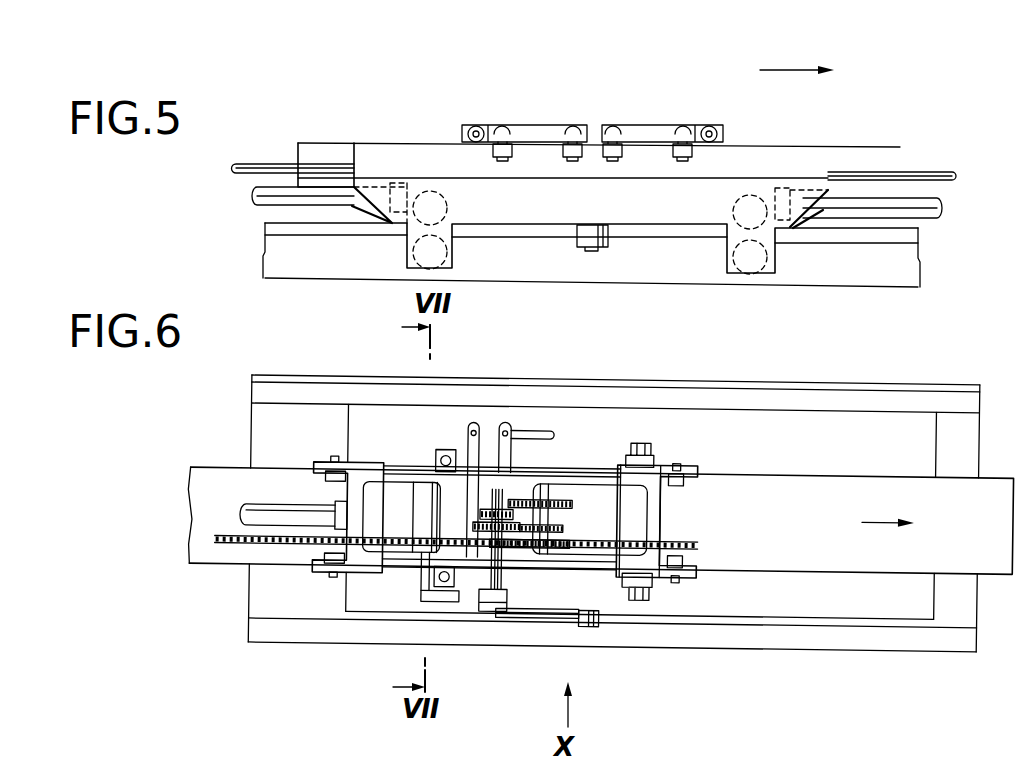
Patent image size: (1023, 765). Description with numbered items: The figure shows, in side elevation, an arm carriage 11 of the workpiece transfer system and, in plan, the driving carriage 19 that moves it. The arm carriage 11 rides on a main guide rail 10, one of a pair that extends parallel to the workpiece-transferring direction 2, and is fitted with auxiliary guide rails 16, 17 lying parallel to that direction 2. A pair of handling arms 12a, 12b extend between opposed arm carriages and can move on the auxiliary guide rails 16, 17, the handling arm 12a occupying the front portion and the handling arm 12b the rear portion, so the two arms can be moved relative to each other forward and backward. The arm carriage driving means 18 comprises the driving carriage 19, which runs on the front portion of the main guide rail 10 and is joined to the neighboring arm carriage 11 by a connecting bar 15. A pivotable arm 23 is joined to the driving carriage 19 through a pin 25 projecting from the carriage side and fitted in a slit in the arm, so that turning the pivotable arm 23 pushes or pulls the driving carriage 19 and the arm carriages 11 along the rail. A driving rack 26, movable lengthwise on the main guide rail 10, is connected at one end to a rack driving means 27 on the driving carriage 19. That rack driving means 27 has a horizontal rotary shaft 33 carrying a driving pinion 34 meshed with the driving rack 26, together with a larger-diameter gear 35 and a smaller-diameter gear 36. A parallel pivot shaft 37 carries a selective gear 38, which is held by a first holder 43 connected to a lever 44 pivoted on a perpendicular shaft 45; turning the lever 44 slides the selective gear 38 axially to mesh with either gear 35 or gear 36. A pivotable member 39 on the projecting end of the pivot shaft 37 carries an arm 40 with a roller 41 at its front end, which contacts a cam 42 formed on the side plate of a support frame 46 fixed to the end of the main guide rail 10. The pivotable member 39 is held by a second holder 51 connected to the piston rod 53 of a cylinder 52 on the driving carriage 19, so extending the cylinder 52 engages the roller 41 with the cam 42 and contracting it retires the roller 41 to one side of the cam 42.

In FIG. 5, the workpiece-transferring direction 2 is at (788, 70).
In FIG. 6, the workpiece-transferring direction 2 is at (882, 514).
In FIG. 5, the main guide rail 10 is at (655, 280).
In FIG. 6, the main guide rail 10 is at (802, 475).
In FIG. 5, the arm carriage 11 is at (521, 225).
In FIG. 5, the handling arm 12a is at (645, 126).
In FIG. 5, the handling arm 12b is at (531, 126).
In FIG. 5, the connecting bar 15 is at (273, 186).
In FIG. 6, the connecting bar 15 is at (275, 509).
In FIG. 5, the auxiliary guide rail 16 is at (407, 146).
In FIG. 5, the auxiliary guide rail 17 is at (320, 144).
In FIG. 6, the arm carriage driving means 18 is at (692, 583).
In FIG. 6, the driving carriage 19 is at (597, 470).
In FIG. 6, the pivotable arm 23 is at (659, 448).
In FIG. 6, the pin 25 is at (640, 442).
In FIG. 5, the driving rack 26 is at (918, 171).
In FIG. 6, the driving rack 26 is at (277, 545).
In FIG. 6, the rack driving means 27 is at (636, 509).
In FIG. 6, the rotary shaft 33 is at (545, 489).
In FIG. 6, the driving pinion 34 is at (562, 546).
In FIG. 6, the larger-diameter gear 35 is at (572, 499).
In FIG. 6, the smaller-diameter gear 36 is at (563, 525).
In FIG. 6, the pivot shaft 37 is at (503, 577).
In FIG. 6, the selective gear 38 is at (473, 527).
In FIG. 6, the pivotable member 39 is at (495, 609).
In FIG. 6, the arm 40 is at (542, 615).
In FIG. 6, the roller 41 is at (592, 623).
In FIG. 6, the cam 42 is at (798, 617).
In FIG. 6, the first holder 43 is at (467, 445).
In FIG. 6, the lever 44 is at (552, 429).
In FIG. 6, the perpendicular shaft 45 is at (510, 435).
In FIG. 6, the support frame 46 is at (976, 432).
In FIG. 6, the second holder 51 is at (460, 599).
In FIG. 6, the cylinder 52 is at (420, 496).
In FIG. 6, the piston rod 53 is at (428, 581).